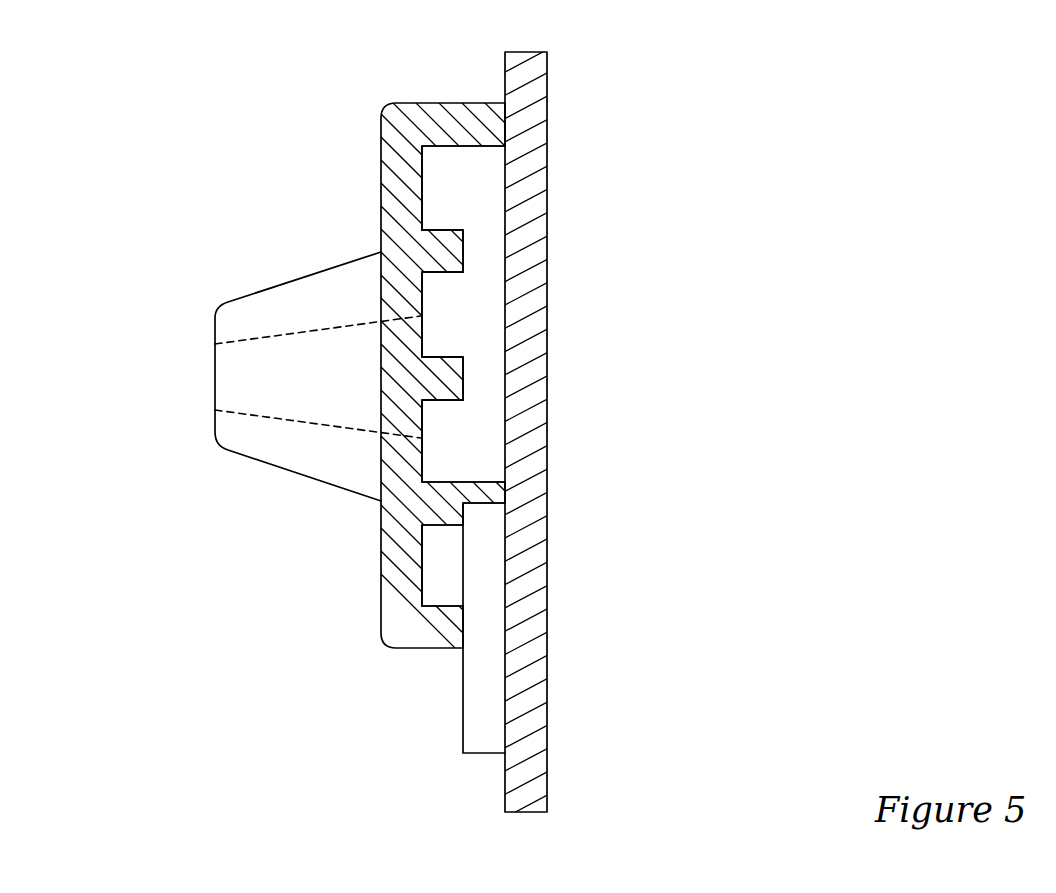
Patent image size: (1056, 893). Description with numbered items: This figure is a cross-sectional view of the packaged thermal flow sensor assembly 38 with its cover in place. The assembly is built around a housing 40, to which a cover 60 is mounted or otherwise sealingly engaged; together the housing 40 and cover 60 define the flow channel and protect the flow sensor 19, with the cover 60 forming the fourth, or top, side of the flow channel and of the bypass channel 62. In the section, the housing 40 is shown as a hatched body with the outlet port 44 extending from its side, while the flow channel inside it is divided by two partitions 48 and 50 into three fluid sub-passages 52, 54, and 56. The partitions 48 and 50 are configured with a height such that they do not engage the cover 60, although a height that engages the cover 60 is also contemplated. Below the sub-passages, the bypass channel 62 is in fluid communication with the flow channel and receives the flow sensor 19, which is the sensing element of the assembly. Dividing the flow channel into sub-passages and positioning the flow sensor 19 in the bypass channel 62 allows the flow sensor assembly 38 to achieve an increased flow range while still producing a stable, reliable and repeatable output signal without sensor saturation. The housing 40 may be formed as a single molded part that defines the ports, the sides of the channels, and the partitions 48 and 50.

The flow sensor assembly 38 is at (267, 85).
The housing 40 is at (453, 106).
The fluid sub-passage 52 is at (447, 191).
The partition 48 is at (458, 252).
The fluid sub-passage 54 is at (440, 296).
The partition 50 is at (458, 377).
The fluid sub-passage 56 is at (437, 462).
The bypass channel 62 is at (435, 567).
The outlet port 44 is at (242, 379).
The flow sensor 19 is at (480, 703).
The cover 60 is at (537, 497).